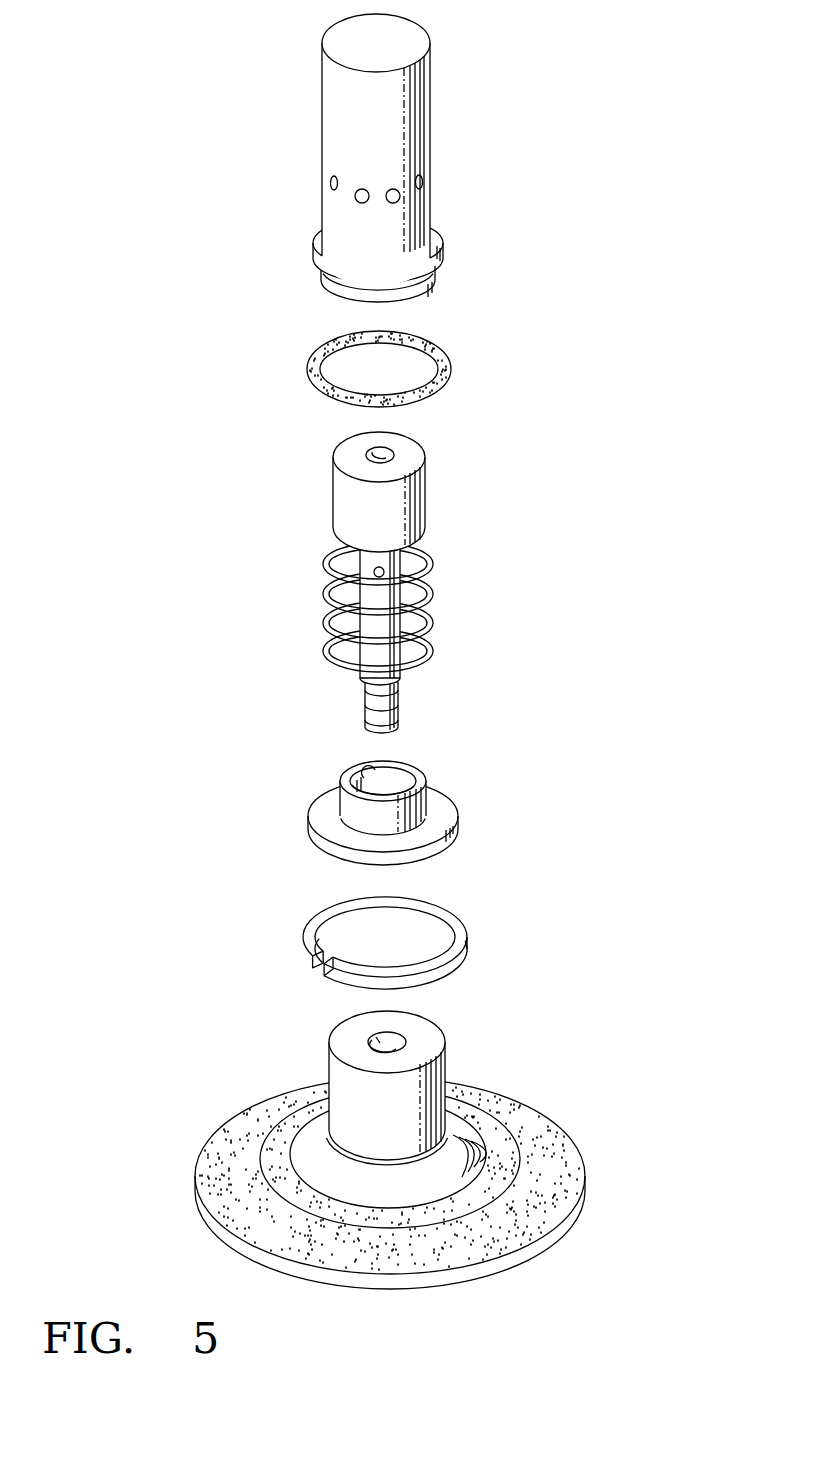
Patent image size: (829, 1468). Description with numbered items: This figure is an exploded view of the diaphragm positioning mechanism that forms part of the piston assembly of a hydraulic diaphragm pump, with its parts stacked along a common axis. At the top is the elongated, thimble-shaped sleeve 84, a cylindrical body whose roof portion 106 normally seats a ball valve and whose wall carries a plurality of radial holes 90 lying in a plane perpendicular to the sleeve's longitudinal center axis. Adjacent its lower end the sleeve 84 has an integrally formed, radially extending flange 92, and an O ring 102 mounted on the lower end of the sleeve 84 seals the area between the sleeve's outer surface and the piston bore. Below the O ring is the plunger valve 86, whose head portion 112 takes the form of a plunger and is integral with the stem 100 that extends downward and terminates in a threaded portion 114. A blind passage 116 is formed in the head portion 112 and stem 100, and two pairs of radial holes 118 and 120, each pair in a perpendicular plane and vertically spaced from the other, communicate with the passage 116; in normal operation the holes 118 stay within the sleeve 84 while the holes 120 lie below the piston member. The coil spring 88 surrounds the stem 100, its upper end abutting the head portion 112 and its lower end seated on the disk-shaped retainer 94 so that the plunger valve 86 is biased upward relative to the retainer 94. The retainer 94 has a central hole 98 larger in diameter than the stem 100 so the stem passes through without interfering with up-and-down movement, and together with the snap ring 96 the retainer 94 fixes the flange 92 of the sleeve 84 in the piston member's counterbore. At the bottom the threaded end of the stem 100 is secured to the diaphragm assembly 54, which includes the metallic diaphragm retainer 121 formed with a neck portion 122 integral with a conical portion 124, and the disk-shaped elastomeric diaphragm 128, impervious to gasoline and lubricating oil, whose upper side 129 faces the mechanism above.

The diaphragm assembly 54 is at (399, 1144).
The sleeve 84 is at (378, 144).
The plunger valve 86 is at (377, 641).
The coil spring 88 is at (434, 600).
The radial holes 90 is at (355, 196).
The flange 92 is at (440, 238).
The retainer 94 is at (398, 800).
The snap ring 96 is at (455, 925).
The hole 98 is at (358, 767).
The stem 100 is at (360, 611).
The O ring 102 is at (453, 366).
The roof portion 106 is at (410, 36).
The head portion 112 is at (371, 492).
The threaded portion 114 is at (399, 720).
The blind passage 116 is at (385, 455).
The radial holes 118 is at (386, 571).
The radial holes 120 is at (398, 681).
The diaphragm retainer 121 is at (458, 1110).
The neck portion 122 is at (338, 1070).
The conical portion 124 is at (325, 1150).
The diaphragm 128 is at (582, 1196).
The upper side 129 is at (222, 1175).